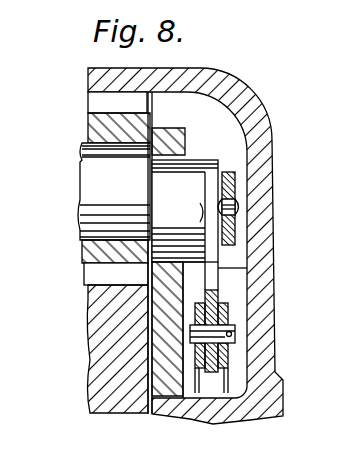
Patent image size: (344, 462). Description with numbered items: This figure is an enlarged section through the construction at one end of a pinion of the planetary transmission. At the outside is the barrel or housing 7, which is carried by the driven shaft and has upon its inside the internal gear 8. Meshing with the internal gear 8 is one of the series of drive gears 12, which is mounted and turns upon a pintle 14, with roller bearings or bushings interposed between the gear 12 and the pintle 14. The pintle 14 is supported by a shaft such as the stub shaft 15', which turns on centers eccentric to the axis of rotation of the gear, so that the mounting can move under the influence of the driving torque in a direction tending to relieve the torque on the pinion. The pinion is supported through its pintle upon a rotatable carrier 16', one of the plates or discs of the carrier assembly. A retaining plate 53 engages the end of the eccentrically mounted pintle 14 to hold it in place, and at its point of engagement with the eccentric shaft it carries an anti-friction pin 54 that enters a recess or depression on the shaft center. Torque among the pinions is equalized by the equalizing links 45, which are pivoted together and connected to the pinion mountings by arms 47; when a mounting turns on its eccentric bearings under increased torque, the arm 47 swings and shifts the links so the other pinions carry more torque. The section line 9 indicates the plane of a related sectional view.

The barrel or housing 7 is at (239, 100).
The internal gear 8 is at (171, 100).
The drive gear 12 is at (104, 105).
The pintle 14 is at (127, 194).
The stub shaft 15' is at (191, 195).
The retaining plate 53 is at (236, 183).
The anti-friction pin 54 is at (236, 207).
The arm 47 is at (247, 268).
The equalizing link 45 is at (236, 353).
The rotatable carrier 16' is at (182, 432).
The section line 9 is at (62, 195).